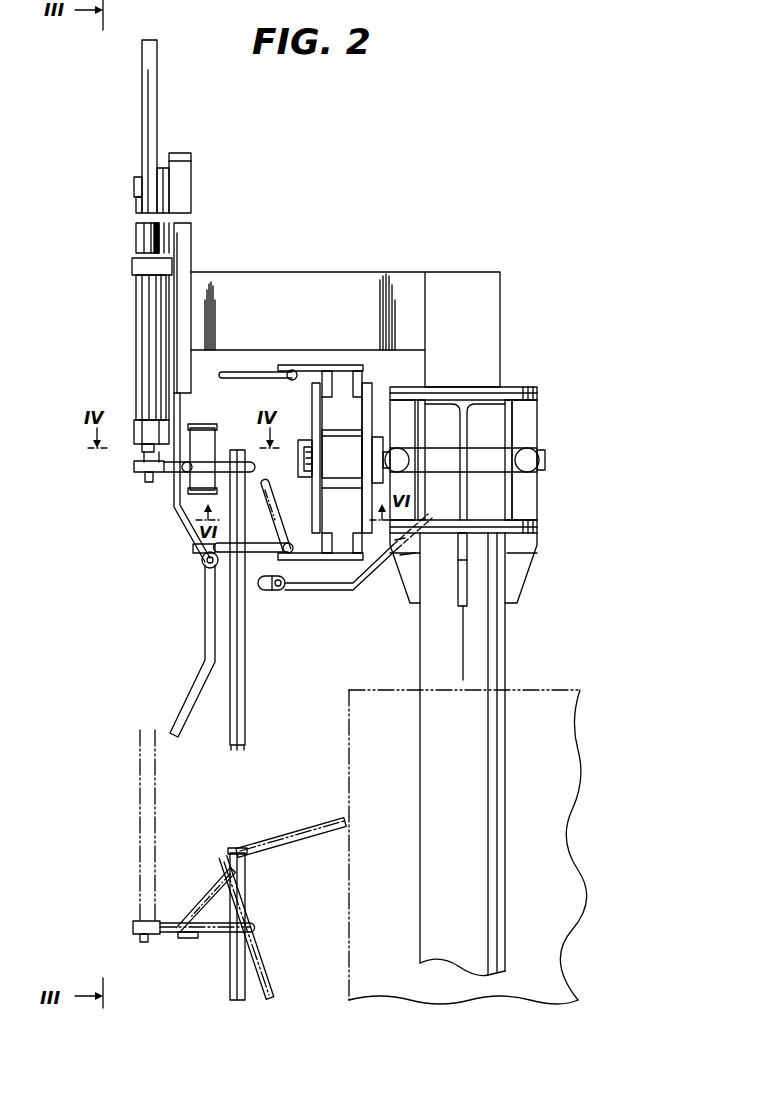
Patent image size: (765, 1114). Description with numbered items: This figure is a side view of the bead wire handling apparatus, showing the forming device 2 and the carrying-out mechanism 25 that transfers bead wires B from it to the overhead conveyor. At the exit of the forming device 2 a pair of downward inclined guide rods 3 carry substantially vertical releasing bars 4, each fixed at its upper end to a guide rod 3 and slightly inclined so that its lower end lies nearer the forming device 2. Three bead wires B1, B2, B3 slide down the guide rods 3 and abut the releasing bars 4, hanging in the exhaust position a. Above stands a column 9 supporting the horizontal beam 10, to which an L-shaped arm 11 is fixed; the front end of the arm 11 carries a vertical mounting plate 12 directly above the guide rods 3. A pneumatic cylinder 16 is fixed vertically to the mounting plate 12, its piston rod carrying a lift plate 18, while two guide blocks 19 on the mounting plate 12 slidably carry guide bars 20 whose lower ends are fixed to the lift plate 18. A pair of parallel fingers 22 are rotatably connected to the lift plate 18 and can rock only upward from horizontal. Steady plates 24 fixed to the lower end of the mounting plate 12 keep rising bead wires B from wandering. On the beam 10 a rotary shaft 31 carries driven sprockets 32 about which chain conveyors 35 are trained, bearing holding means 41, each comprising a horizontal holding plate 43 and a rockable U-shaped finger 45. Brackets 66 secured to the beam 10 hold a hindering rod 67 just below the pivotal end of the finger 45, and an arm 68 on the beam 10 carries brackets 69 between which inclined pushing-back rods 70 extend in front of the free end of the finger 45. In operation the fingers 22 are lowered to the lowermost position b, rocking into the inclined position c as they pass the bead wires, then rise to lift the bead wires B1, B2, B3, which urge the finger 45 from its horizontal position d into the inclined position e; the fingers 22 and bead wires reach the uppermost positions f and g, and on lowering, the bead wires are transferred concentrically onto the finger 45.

The forming device 2 is at (538, 690).
The guide rod 3 is at (318, 830).
The releasing bar 4 is at (270, 980).
The column 9 is at (485, 654).
The horizontal beam 10 is at (467, 439).
The L-shaped arm 11 is at (332, 272).
The mounting plate 12 is at (179, 240).
The pneumatic cylinder 16 is at (136, 240).
The lift plate 18 is at (134, 467).
The guide block 19 is at (136, 430).
The guide bar 20 is at (139, 318).
The finger 22 is at (233, 450).
The steady plate 24 is at (207, 656).
The carrying-out mechanism 25 is at (137, 190).
The rotary shaft 31 is at (386, 456).
The driven sprocket 32 is at (370, 380).
The chain conveyor 35 is at (380, 388).
The holding means 41 is at (333, 362).
The holding plate 43 is at (291, 370).
The finger 45 is at (238, 374).
The bracket 66 is at (377, 572).
The hindering rod 67 is at (266, 590).
The arm 68 is at (195, 484).
The bracket 69 is at (188, 518).
The pushing-back rod 70 is at (202, 566).
The bead wire B is at (247, 682).
The bead wire B1 is at (228, 742).
The bead wire B2 is at (235, 742).
The bead wire B3 is at (247, 742).
The position a is at (248, 887).
The lowermost position b is at (195, 934).
The inclined position c is at (197, 895).
The horizontal position d is at (246, 552).
The inclined position e is at (270, 492).
The uppermost position f is at (203, 480).
The uppermost position g is at (247, 484).